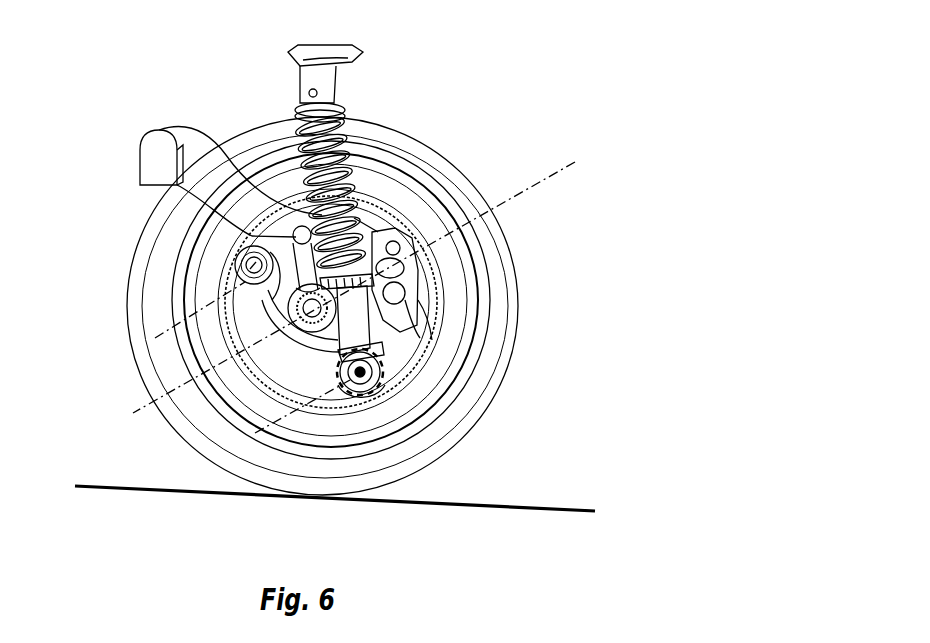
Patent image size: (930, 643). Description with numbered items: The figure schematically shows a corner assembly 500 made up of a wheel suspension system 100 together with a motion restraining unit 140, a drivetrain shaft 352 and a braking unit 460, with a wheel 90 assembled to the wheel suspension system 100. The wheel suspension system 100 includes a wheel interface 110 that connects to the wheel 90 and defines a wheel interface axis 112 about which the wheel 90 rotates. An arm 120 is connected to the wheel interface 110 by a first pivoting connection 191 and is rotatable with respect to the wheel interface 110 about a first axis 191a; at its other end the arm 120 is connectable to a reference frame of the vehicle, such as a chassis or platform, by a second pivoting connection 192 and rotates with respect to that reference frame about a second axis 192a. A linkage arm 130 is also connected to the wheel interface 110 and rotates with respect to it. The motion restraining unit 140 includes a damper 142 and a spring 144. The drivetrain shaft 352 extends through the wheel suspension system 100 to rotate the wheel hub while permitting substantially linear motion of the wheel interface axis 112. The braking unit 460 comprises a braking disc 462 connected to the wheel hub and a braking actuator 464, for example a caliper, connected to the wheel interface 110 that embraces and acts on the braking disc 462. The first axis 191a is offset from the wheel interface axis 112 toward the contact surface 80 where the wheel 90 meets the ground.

The corner assembly 500 is at (88, 91).
The contact surface 80 is at (590, 508).
The wheel 90 is at (518, 280).
The wheel suspension system 100 is at (218, 260).
The wheel interface 110 is at (287, 290).
The wheel interface axis 112 is at (545, 178).
The arm 120 is at (267, 357).
The linkage arm 130 is at (242, 197).
The motion restraining unit 140 is at (425, 203).
The damper 142 is at (358, 313).
The spring 144 is at (353, 187).
The first pivoting connection 191 is at (362, 380).
The first axis 191a is at (287, 417).
The second pivoting connection 192 is at (247, 265).
The second axis 192a is at (155, 338).
The drivetrain shaft 352 is at (310, 272).
The braking unit 460 is at (499, 400).
The braking disc 462 is at (415, 325).
The braking actuator 464 is at (413, 317).